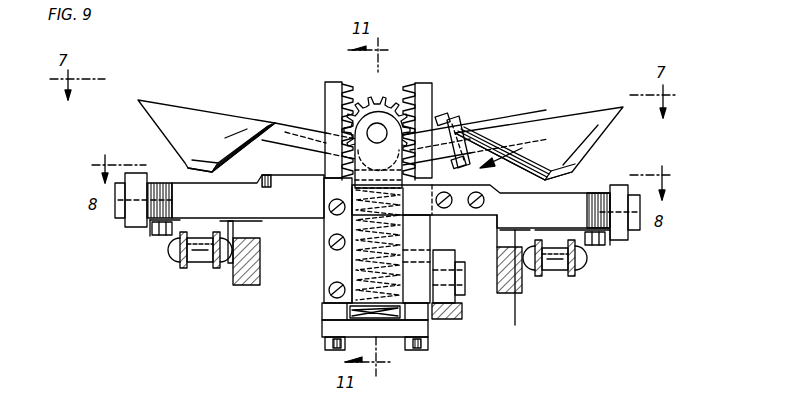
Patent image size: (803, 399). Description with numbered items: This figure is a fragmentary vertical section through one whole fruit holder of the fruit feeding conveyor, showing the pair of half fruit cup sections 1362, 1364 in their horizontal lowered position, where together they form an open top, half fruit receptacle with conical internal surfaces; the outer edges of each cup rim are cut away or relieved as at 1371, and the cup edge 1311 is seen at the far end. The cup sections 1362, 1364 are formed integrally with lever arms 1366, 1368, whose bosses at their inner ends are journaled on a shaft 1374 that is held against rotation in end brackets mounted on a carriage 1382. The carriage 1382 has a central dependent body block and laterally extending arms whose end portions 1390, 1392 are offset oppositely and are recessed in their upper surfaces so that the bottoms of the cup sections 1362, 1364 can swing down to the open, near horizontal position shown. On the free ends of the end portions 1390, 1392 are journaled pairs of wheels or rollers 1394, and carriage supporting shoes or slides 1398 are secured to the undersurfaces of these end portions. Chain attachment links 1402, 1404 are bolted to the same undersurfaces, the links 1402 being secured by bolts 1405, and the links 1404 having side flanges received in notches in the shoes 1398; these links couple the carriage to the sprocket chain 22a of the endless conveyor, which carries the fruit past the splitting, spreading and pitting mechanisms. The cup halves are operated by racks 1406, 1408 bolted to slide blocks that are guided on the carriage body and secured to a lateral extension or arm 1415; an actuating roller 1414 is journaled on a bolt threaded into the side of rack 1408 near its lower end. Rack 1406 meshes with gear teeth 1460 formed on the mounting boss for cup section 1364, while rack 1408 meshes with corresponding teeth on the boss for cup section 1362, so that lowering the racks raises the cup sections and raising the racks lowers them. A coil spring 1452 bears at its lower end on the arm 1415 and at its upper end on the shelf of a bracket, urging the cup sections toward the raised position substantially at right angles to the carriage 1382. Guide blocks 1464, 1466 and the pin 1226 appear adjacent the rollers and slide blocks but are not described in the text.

The relieved outer edge of cup rim 1371 is at (152, 100).
The cup section 1362 is at (187, 108).
The lever arm 1366 is at (282, 124).
The rack 1406 is at (326, 82).
The gear teeth 1460 is at (358, 100).
The shaft 1374 is at (378, 131).
The rack 1408 is at (425, 83).
The lever arm 1368 is at (462, 126).
The cup section 1364 is at (540, 118).
The carriage 1382 is at (475, 137).
The right blade edge 1311 is at (606, 106).
The end portion of carriage arm 1390 is at (237, 196).
The end portion of carriage arm 1392 is at (481, 206).
The wheels or rollers 1394 is at (125, 227).
The bolts 1405 is at (155, 234).
The chain attachment links 1402 is at (172, 236).
The sprocket chain 22a is at (203, 268).
The chain attachment links 1404 is at (224, 268).
The carriage supporting shoes or slides 1398 is at (246, 236).
The left guide block 1464 is at (252, 258).
The spring 1452 is at (324, 281).
The lateral extension or arm 1415 is at (325, 332).
The right guide block 1466 is at (497, 258).
The actuating roller 1414 is at (456, 300).
The roller pin 1226 is at (558, 276).